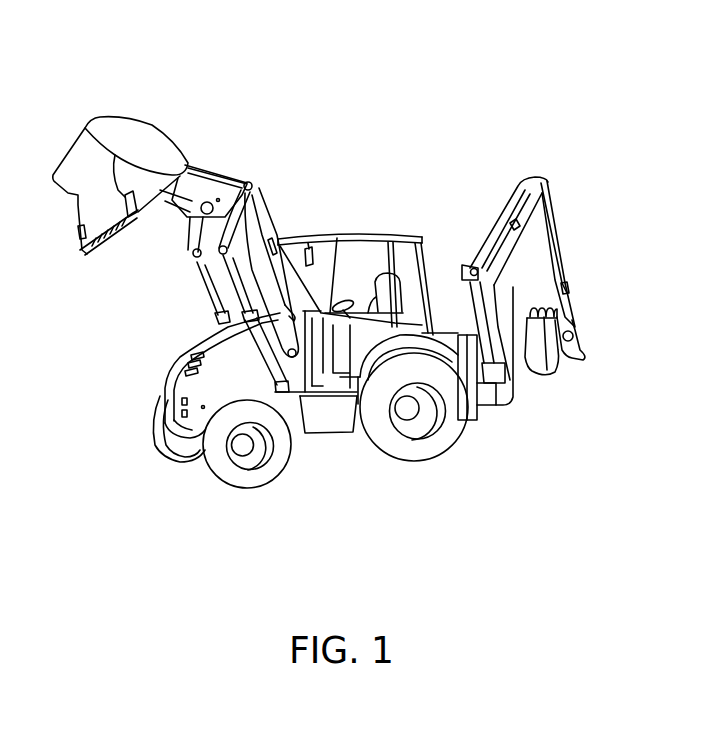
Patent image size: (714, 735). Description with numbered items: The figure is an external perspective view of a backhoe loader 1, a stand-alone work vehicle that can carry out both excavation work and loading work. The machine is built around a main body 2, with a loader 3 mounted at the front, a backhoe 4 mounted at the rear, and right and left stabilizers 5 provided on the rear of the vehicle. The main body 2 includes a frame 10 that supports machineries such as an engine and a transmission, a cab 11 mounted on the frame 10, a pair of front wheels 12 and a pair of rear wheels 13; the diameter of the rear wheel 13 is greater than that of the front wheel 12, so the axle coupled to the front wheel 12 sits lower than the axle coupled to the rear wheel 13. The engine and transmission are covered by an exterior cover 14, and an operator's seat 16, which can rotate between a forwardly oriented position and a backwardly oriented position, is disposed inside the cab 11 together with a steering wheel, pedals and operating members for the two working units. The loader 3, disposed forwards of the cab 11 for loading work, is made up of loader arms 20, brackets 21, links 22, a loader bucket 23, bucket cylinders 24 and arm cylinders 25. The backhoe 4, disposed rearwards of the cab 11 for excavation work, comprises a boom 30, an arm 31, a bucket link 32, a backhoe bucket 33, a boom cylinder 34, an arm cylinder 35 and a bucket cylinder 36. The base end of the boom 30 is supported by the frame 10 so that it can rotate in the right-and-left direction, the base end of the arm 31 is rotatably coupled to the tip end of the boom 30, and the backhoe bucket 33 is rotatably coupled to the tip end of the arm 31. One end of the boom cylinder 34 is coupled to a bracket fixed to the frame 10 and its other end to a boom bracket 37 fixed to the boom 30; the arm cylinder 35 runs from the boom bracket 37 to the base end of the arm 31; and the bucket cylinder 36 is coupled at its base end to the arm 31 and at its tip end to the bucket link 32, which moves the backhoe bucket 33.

The backhoe loader 1 is at (375, 93).
The main body 2 is at (393, 232).
The loader 3 is at (73, 130).
The backhoe 4 is at (565, 191).
The stabilizers 5 is at (473, 408).
The frame 10 is at (327, 420).
The cab 11 is at (428, 244).
The front wheels 12 is at (225, 462).
The rear wheels 13 is at (407, 456).
The exterior cover 14 is at (170, 360).
The operator's seat 16 is at (378, 308).
The loader arms 20 is at (245, 235).
The brackets 21 is at (244, 185).
The links 22 is at (201, 176).
The loader bucket 23 is at (108, 125).
The bucket cylinders 24 is at (272, 228).
The arm cylinders 25 is at (215, 322).
The boom 30 is at (498, 296).
The arm 31 is at (540, 263).
The bucket link 32 is at (577, 341).
The backhoe bucket 33 is at (542, 363).
The boom cylinder 34 is at (473, 300).
The arm cylinder 35 is at (503, 226).
The bucket cylinder 36 is at (550, 210).
The boom bracket 37 is at (468, 277).